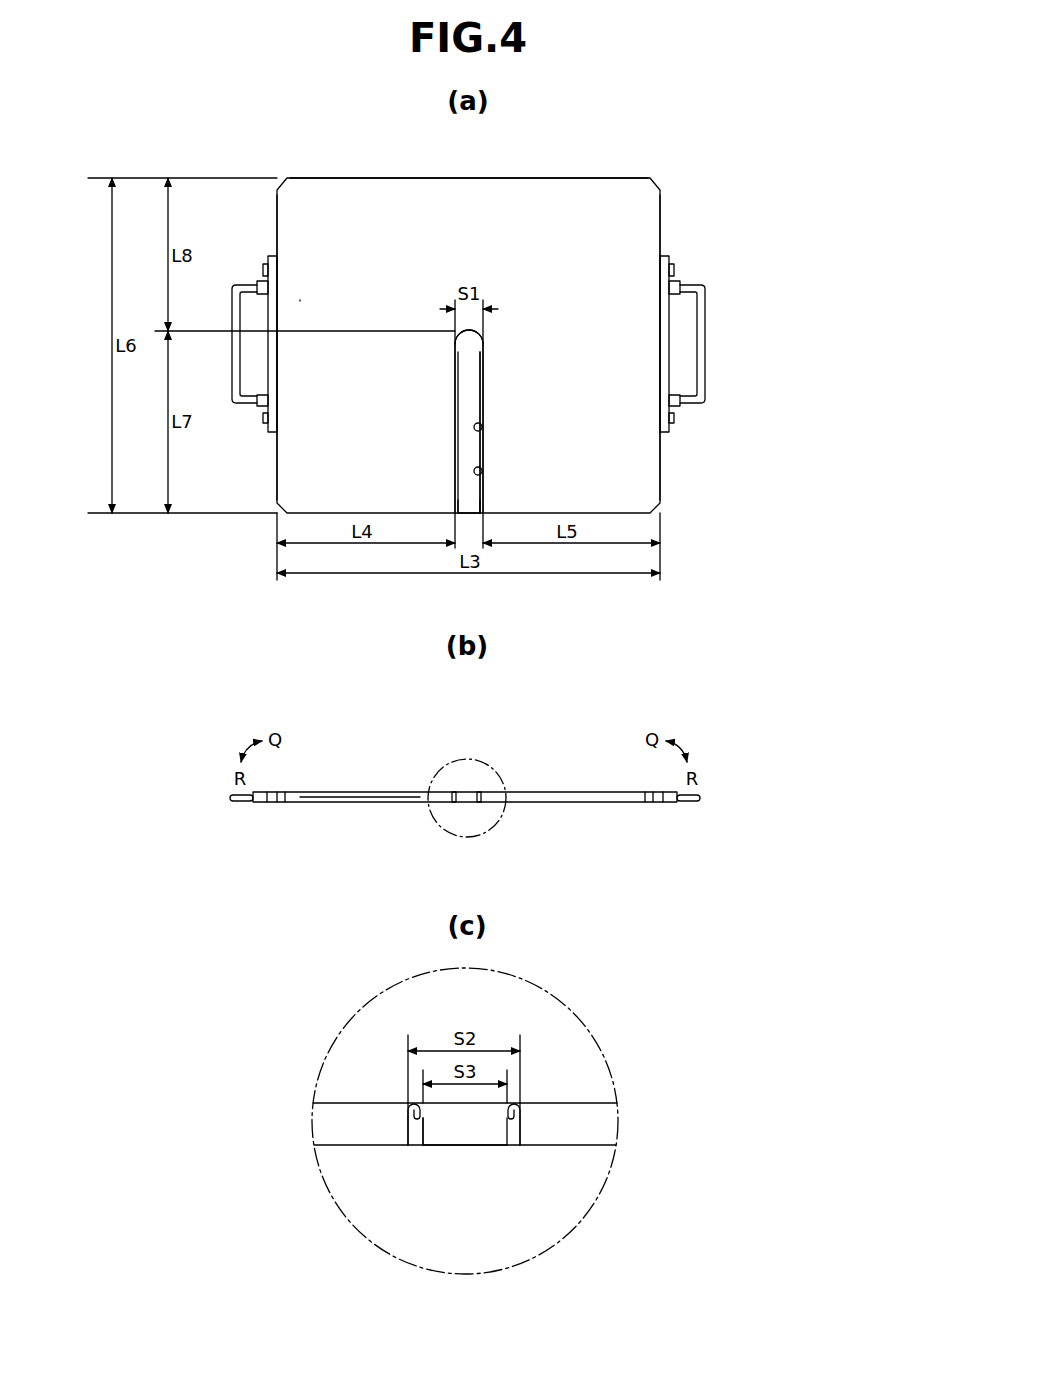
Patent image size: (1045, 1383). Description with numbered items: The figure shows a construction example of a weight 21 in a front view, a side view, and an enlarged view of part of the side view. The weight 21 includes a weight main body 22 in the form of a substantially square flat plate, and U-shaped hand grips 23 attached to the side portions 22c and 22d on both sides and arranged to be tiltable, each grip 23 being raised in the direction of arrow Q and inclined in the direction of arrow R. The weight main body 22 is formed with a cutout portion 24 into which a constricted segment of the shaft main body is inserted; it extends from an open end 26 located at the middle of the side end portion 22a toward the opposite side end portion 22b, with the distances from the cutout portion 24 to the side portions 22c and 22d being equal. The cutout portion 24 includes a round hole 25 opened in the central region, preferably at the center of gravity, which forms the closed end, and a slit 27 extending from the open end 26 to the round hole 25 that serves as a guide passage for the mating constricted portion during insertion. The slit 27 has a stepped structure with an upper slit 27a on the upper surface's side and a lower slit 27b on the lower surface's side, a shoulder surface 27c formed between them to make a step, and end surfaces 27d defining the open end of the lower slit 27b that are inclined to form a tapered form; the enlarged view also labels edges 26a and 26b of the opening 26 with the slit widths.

The weight 21 is at (488, 698).
The weight main body 22 is at (670, 197).
The side end portion 22a is at (324, 513).
The side end portion 22b is at (415, 178).
The side portion 22c is at (277, 450).
The side portion 22d is at (660, 455).
The hand grip 23 is at (252, 285).
The cutout portion 24 is at (492, 378).
The round hole 25 is at (470, 341).
The open end 26 is at (465, 515).
The first opening edge 26a is at (526, 1114).
The second opening edge 26b is at (476, 1156).
The slit 27 is at (470, 405).
The upper slit 27a is at (482, 430).
The lower slit 27b is at (482, 472).
The shoulder surface 27c is at (413, 1128).
The end surface 27d is at (410, 1147).